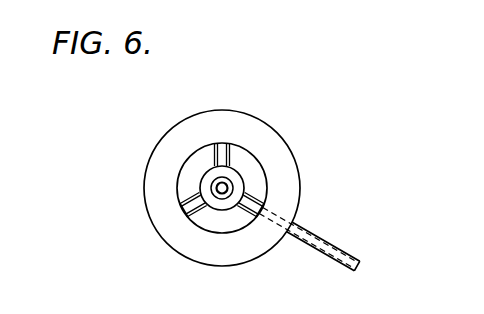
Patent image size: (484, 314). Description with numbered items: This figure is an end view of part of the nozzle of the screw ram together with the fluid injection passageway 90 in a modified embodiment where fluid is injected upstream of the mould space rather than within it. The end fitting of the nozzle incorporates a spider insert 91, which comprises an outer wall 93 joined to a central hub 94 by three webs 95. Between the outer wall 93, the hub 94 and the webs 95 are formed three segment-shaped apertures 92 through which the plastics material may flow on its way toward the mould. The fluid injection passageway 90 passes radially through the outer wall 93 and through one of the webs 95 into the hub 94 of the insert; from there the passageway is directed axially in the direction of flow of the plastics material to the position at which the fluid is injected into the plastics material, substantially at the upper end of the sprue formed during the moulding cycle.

The fluid injection passageway 90 is at (326, 241).
The spider insert 91 is at (136, 137).
The segment-shaped apertures 92 is at (187, 172).
The outer wall 93 is at (158, 192).
The hub 94 is at (212, 205).
The webs 95 is at (225, 149).